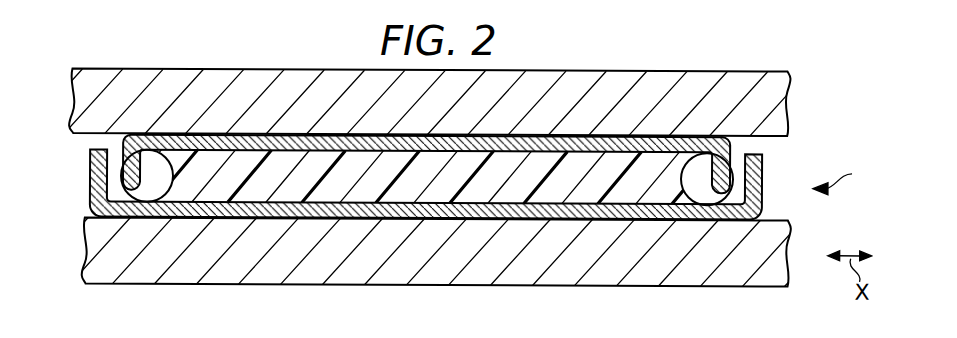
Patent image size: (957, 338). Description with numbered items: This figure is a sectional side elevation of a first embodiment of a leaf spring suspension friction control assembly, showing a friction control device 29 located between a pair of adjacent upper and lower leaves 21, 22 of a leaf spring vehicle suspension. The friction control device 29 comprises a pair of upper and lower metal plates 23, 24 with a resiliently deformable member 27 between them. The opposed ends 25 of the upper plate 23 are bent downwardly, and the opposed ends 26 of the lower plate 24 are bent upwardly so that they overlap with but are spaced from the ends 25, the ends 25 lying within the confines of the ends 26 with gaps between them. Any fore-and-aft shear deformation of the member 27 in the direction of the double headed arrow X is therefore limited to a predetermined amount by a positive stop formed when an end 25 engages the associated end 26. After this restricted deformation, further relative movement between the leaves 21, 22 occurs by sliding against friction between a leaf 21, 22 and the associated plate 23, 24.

The upper leaf 21 is at (712, 70).
The lower leaf 22 is at (708, 290).
The upper plate 23 is at (252, 143).
The lower plate 24 is at (227, 210).
The ends of the upper plate 25 is at (123, 140).
The ends of the lower plate 26 is at (90, 188).
The resiliently deformable member 27 is at (434, 191).
The friction control device 29 is at (846, 179).